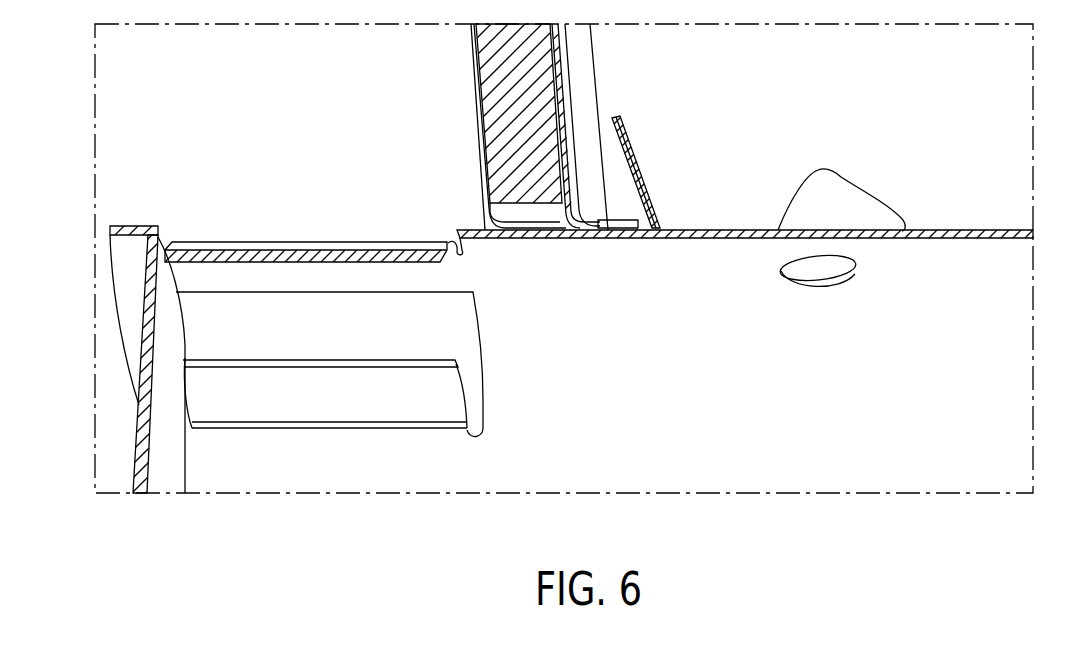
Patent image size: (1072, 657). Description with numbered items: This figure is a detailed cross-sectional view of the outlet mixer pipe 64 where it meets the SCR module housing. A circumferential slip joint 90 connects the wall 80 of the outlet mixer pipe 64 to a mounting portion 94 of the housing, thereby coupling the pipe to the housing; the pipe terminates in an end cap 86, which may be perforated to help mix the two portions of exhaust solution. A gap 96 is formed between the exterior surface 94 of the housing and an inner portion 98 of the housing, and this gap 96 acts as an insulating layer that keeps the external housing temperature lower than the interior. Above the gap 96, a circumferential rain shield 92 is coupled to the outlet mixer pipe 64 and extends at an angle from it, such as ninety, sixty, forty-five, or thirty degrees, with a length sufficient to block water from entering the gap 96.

The outlet mixer pipe 64 is at (353, 240).
The wall 80 is at (515, 238).
The end cap 86 is at (160, 402).
The circumferential slip joint 90 is at (607, 234).
The circumferential rain shield 92 is at (653, 195).
The mounting portion 94 is at (596, 56).
The gap 96 is at (597, 230).
The inner portion 98 is at (484, 110).